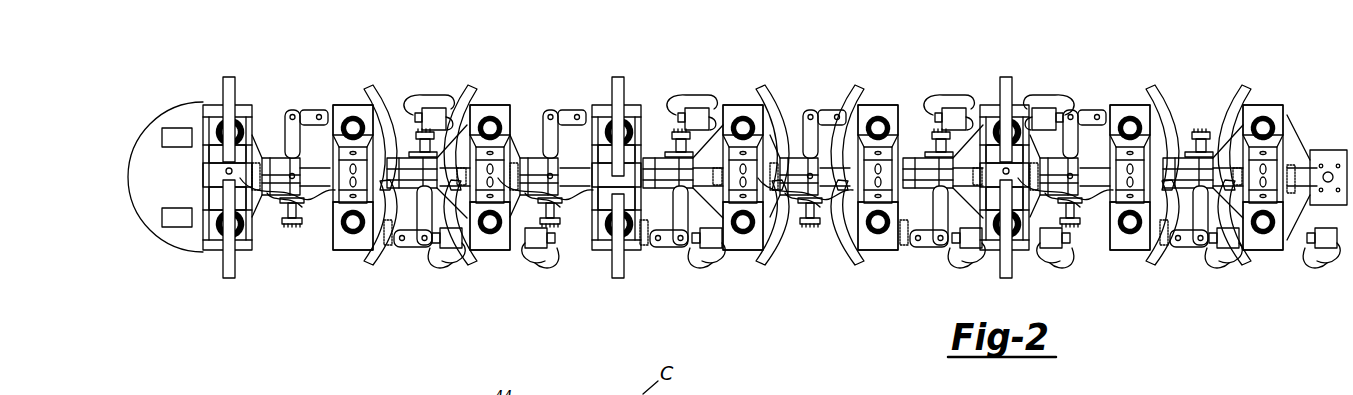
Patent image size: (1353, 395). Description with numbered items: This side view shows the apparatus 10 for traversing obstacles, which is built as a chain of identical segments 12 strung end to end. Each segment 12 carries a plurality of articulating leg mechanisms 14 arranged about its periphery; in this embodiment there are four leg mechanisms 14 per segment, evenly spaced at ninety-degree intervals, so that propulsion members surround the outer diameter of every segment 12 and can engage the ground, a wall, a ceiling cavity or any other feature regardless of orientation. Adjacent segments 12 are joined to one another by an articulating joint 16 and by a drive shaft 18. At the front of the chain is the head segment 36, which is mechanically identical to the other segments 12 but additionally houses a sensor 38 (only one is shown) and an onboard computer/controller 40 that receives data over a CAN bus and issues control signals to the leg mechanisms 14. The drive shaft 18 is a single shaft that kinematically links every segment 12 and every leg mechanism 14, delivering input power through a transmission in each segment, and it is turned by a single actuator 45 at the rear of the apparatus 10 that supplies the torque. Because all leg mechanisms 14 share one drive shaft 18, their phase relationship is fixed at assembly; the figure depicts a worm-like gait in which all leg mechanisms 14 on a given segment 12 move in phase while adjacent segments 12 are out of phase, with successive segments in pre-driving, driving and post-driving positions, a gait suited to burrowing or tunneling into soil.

The apparatus 10 is at (736, 171).
The segment 12 is at (346, 104).
The articulating leg mechanism 14 is at (229, 74).
The articulating joint 16 is at (295, 232).
The drive shaft 18 is at (310, 175).
The head segment 36 is at (142, 150).
The sensor 38 is at (172, 222).
The onboard computer/controller 40 is at (172, 130).
The actuator 45 is at (1332, 150).